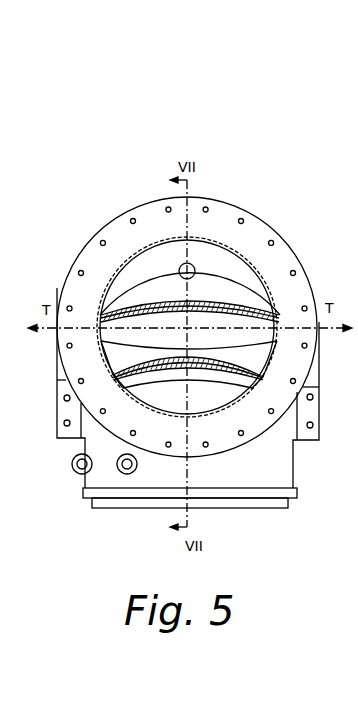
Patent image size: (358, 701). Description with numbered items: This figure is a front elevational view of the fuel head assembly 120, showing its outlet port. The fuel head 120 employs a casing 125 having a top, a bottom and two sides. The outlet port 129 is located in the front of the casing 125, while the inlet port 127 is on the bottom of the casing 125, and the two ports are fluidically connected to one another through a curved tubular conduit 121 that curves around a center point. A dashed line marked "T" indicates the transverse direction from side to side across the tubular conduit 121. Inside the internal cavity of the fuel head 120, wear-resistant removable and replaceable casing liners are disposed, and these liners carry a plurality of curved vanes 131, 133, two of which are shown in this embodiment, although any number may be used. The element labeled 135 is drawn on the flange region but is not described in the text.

The fuel head assembly 120 is at (203, 114).
The tubular conduit 121 is at (165, 287).
The casing 125 is at (277, 468).
The inlet port 127 is at (220, 508).
The outlet port 129 is at (227, 293).
The curved vane 131 is at (158, 317).
The curved vane 133 is at (150, 377).
The flange 135 is at (223, 217).